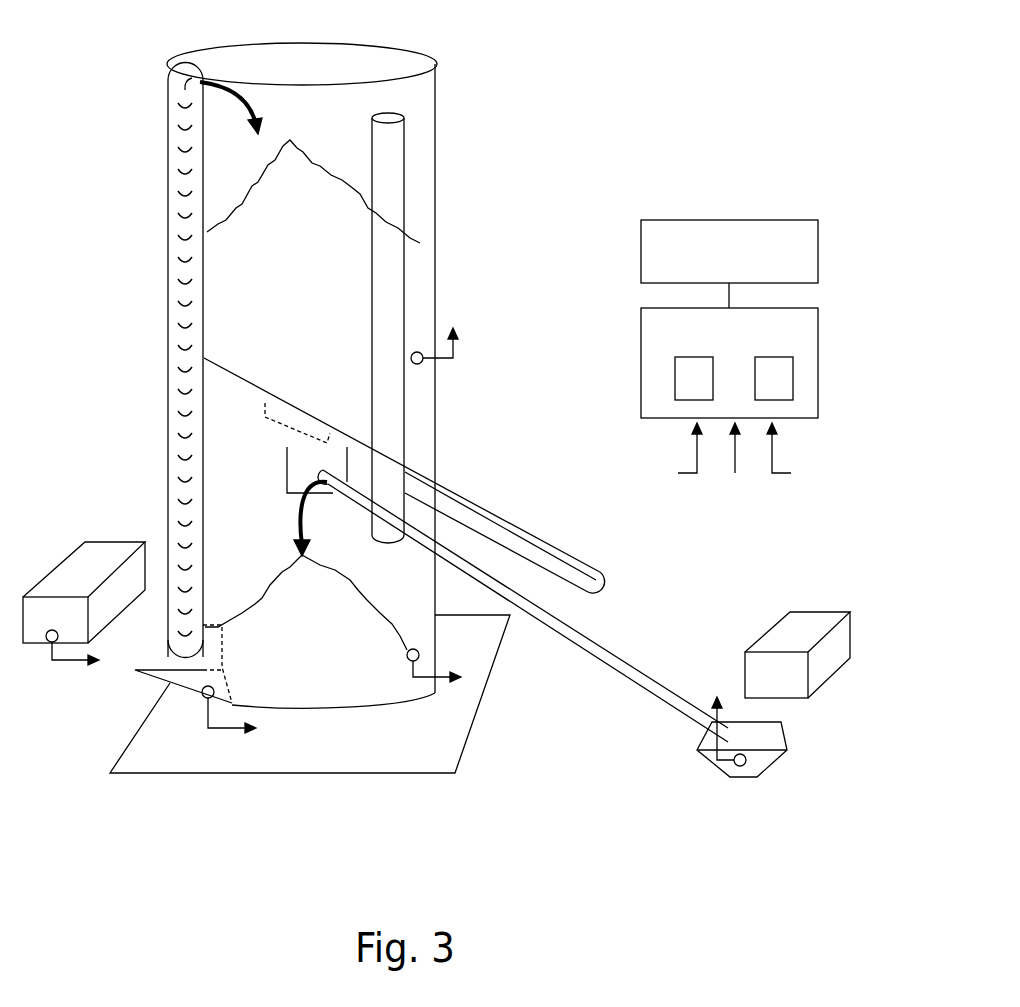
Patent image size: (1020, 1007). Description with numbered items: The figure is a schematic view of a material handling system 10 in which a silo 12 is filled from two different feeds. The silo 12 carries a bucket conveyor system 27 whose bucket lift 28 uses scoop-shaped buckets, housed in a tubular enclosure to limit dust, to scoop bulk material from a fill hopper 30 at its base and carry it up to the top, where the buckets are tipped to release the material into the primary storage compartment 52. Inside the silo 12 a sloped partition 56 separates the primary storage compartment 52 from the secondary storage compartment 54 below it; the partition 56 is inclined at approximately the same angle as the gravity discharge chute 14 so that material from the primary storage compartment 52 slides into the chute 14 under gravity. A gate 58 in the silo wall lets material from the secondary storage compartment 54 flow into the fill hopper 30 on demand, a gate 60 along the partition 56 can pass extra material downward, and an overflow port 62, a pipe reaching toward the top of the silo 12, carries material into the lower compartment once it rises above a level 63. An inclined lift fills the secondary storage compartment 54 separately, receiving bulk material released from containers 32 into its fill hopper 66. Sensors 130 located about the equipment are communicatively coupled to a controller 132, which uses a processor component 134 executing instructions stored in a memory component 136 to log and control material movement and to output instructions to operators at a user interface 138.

The material handling system 10 is at (655, 178).
The silo 12 is at (420, 170).
The gravity discharge chute 14 is at (490, 515).
The bucket conveyor system 27 is at (150, 383).
The bucket lift 28 is at (168, 152).
The fill hopper 30 is at (175, 682).
The container 32 is at (100, 568).
The primary storage compartment 52 is at (252, 287).
The secondary storage compartment 54 is at (405, 592).
The partition 56 is at (233, 373).
The gate 58 is at (242, 612).
The gate 60 is at (282, 433).
The overflow port 62 is at (398, 305).
The level 63 is at (400, 110).
The fill hopper 66 is at (771, 758).
The sensor 130 is at (421, 363).
The controller 132 is at (818, 336).
The processor component 134 is at (675, 378).
The memory component 136 is at (793, 375).
The user interface 138 is at (641, 255).